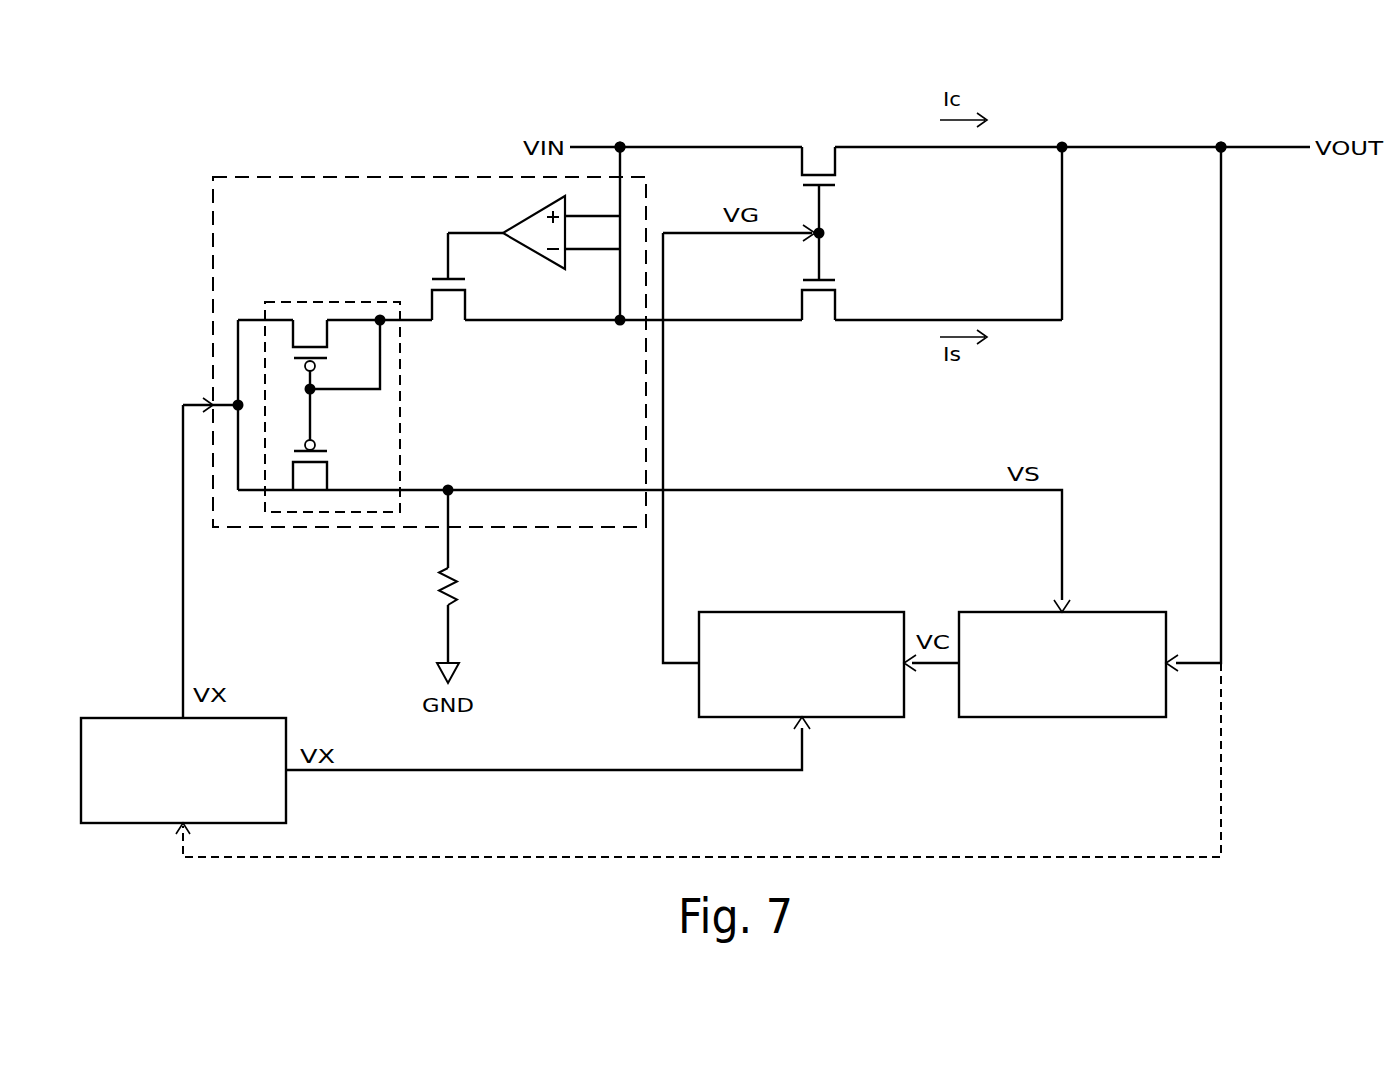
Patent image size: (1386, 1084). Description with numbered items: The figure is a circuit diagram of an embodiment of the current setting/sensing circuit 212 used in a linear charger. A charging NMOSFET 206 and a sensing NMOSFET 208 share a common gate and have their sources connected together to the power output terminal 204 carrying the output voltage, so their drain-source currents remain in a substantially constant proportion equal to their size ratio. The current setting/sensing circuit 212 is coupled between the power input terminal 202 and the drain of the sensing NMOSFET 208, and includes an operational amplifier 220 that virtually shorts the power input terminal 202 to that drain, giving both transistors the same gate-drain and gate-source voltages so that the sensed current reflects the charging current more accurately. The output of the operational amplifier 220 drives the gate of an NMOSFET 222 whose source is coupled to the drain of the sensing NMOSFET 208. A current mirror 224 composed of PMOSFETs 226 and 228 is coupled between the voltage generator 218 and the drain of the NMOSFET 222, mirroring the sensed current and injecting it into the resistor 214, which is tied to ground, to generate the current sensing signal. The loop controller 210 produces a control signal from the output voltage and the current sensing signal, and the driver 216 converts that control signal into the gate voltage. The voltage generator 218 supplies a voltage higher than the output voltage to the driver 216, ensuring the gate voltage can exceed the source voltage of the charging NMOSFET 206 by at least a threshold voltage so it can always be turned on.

The power input terminal 202 is at (620, 147).
The power output terminal 204 is at (1221, 147).
The charging NMOSFET 206 is at (859, 181).
The sensing NMOSFET 208 is at (859, 284).
The loop controller 210 is at (1063, 717).
The current setting/sensing circuit 212 is at (327, 177).
The resistor 214 is at (478, 596).
The driver 216 is at (850, 717).
The voltage generator 218 is at (120, 718).
The operational amplifier 220 is at (541, 214).
The NMOSFET 222 is at (415, 276).
The current mirror 224 is at (400, 398).
The PMOSFET 226 is at (310, 305).
The PMOSFET 228 is at (339, 447).